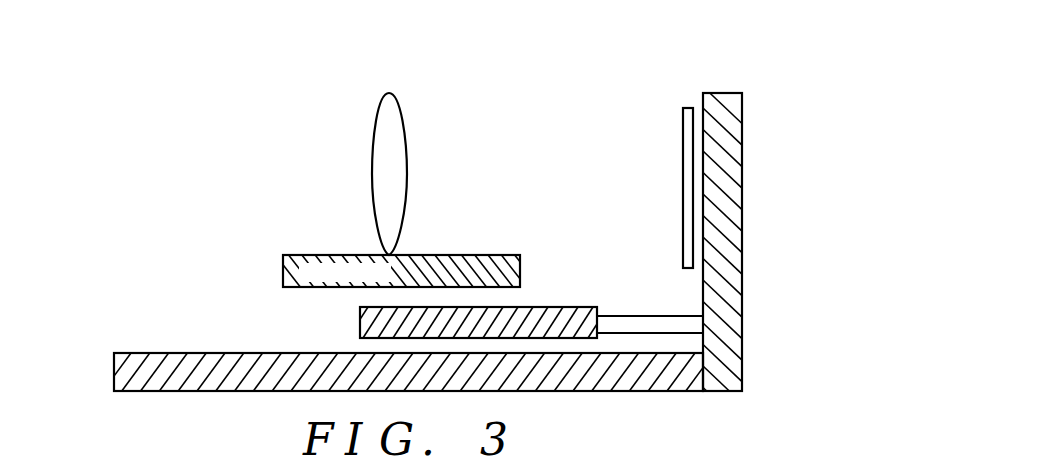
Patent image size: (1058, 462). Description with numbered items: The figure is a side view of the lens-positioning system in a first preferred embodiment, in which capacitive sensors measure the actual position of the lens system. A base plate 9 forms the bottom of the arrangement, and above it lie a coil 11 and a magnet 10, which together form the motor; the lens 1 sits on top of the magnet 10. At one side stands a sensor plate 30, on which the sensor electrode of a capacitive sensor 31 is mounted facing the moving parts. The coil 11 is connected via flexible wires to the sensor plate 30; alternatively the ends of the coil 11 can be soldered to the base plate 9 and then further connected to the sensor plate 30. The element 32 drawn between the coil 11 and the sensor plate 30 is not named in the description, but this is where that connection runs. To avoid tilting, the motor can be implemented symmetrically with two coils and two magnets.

The lens 1 is at (383, 138).
The base plate 9 is at (114, 371).
The magnet 10 is at (474, 257).
The coil 11 is at (566, 313).
The sensor plate 30 is at (722, 102).
The capacitive sensor 31 is at (683, 124).
The rod 32 is at (650, 325).